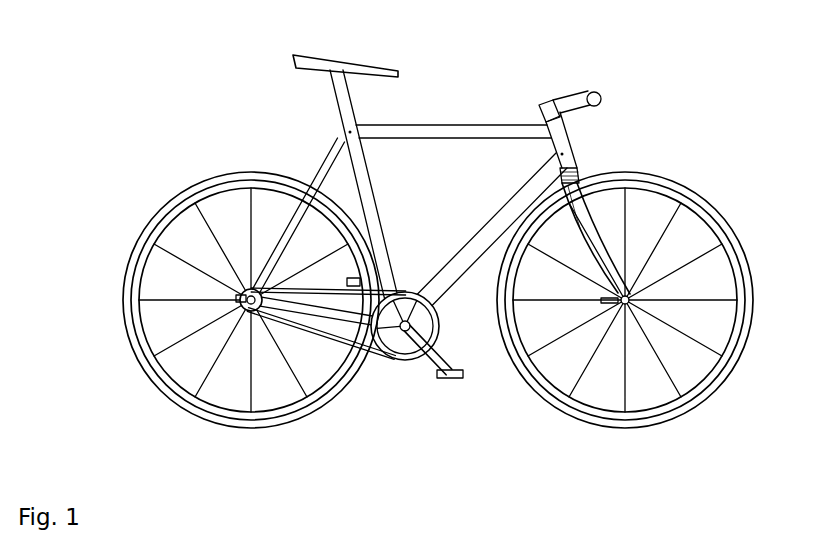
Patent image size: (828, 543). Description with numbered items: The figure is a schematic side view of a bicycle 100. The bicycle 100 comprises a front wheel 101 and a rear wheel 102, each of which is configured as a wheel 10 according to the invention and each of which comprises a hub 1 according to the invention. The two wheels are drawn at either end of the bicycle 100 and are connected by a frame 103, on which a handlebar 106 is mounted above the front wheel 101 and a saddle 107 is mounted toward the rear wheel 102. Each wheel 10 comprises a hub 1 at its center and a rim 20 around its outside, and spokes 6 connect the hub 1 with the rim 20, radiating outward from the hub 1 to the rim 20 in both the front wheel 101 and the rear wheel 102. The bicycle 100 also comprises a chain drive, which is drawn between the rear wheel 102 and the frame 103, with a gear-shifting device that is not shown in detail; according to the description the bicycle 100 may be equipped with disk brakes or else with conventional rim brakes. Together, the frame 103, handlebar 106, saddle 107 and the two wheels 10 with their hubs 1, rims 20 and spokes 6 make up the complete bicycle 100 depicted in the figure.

The bicycle 100 is at (181, 93).
The wheel 10 is at (188, 173).
The rear wheel 102 is at (137, 215).
The front wheel 101 is at (730, 215).
The rim 20 is at (653, 192).
The hub 1 is at (239, 297).
The spokes 6 is at (167, 342).
The frame 103 is at (458, 122).
The saddle 107 is at (330, 67).
The handlebar 106 is at (573, 100).